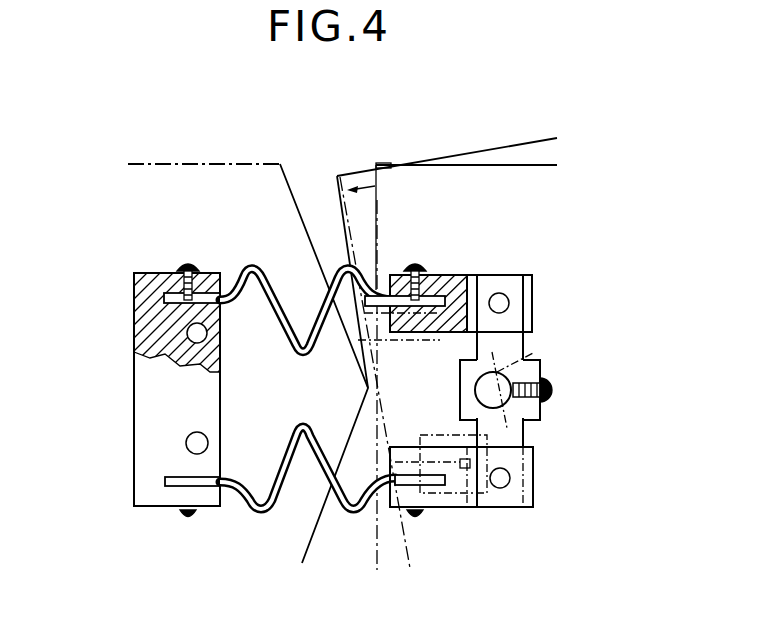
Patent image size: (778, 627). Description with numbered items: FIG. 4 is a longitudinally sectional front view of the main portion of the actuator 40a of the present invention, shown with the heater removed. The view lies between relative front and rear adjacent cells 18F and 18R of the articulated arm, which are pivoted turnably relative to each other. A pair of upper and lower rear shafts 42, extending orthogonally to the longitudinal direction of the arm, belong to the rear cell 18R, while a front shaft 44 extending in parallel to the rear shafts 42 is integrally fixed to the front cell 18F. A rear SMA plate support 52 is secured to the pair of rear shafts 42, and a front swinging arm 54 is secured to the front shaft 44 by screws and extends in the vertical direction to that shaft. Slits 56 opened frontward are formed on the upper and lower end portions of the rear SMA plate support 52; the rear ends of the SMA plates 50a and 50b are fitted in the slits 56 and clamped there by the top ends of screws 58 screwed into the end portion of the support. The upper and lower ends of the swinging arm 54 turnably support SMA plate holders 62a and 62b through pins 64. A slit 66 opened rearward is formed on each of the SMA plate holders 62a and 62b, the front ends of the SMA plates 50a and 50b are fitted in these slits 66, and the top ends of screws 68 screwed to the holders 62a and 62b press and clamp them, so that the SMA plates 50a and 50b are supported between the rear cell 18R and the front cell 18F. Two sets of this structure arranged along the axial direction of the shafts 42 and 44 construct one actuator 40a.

The rear cell 18R is at (130, 163).
The front cell 18F is at (503, 165).
The actuator 40a is at (422, 212).
The rear SMA plate support 52 is at (150, 331).
The rear shafts 42 is at (186, 437).
The slits 56 is at (165, 296).
The screws 58 is at (184, 275).
The SMA plate 50a is at (262, 270).
The SMA plate 50b is at (282, 505).
The SMA plate holder 62a is at (452, 275).
The SMA plate holder 62b is at (447, 496).
The slit 66 is at (425, 300).
The screws 68 is at (413, 273).
The pins 64 is at (500, 294).
The front swinging arm 54 is at (500, 436).
The front shaft 44 is at (518, 368).